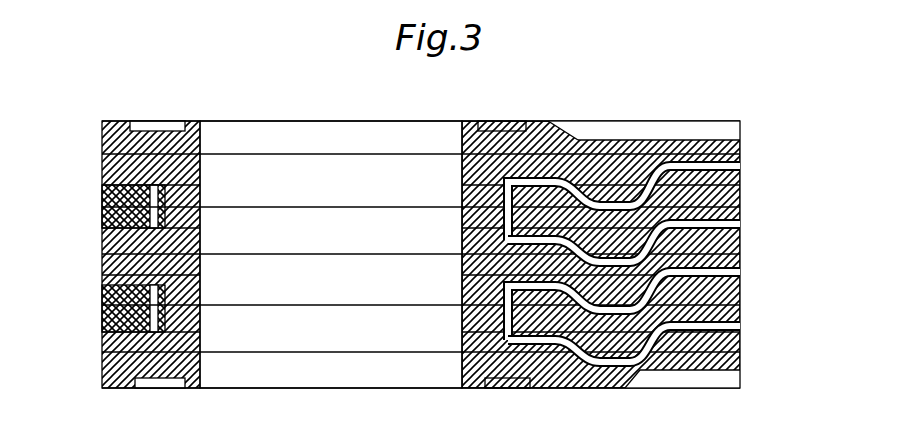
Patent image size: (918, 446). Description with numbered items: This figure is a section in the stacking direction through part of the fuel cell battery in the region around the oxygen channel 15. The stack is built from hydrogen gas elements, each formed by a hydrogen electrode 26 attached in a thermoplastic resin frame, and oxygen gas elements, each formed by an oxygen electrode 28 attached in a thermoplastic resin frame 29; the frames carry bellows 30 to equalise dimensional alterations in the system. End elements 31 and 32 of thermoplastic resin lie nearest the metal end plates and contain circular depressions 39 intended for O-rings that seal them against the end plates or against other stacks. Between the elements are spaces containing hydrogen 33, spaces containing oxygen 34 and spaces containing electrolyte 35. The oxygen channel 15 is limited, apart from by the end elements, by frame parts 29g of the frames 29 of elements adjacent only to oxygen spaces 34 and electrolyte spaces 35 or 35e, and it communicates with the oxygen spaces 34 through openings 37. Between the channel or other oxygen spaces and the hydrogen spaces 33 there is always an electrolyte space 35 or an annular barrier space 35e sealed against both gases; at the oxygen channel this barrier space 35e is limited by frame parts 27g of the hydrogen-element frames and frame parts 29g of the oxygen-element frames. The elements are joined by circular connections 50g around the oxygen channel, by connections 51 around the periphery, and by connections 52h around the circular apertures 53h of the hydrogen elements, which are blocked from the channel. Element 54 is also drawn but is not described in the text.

The oxygen channel 15 is at (338, 140).
The hydrogen electrode 26 is at (696, 330).
The frame parts of the frames of the hydrogen elements 27g is at (102, 214).
The oxygen electrode 28 is at (735, 380).
The thermoplastic resin frame 29 is at (102, 268).
The frame parts of the frames of the oxygen elements 29g is at (200, 154).
The bellows 30 is at (606, 272).
The end element 31 is at (200, 388).
The end element 32 is at (110, 123).
The space containing hydrogen 33 is at (740, 210).
The space containing oxygen 34 is at (740, 148).
The space containing electrolyte 35 is at (740, 180).
The barrier space containing electrolyte 35e is at (102, 168).
The openings 37 is at (462, 152).
The circular depressions 39 is at (158, 126).
The circular connections around the oxygen channel 50g is at (200, 153).
The connections around the periphery of the element 51 is at (102, 140).
The connections around the circular apertures in hydrogen elements 52h is at (462, 214).
The circular apertures in hydrogen elements 53h is at (462, 186).
The conductor strip 54 is at (660, 340).